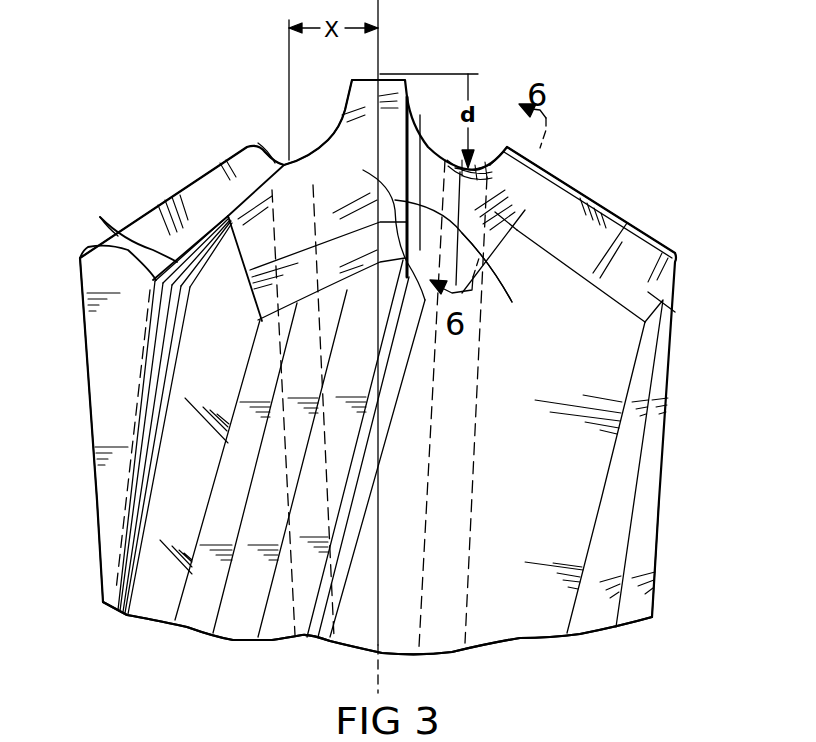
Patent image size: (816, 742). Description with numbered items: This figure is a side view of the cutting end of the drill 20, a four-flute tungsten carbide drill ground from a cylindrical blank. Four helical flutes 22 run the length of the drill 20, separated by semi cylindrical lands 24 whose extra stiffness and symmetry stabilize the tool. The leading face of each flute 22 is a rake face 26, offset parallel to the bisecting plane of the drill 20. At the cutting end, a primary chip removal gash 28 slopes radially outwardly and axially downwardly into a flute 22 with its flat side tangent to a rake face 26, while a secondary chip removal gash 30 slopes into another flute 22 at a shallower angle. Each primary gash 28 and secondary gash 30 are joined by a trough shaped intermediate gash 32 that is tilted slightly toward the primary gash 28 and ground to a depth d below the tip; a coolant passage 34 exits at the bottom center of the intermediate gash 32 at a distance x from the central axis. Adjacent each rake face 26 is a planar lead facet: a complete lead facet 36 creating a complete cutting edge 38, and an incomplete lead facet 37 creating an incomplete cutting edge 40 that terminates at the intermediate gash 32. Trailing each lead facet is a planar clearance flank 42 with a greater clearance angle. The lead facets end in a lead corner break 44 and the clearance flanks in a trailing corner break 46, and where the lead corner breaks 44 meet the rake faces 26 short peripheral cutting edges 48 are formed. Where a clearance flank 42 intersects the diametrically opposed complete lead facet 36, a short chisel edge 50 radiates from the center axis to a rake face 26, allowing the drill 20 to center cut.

The drill 20 is at (660, 92).
The flutes 22 is at (155, 604).
The land 24 is at (88, 375).
The rake face 26 is at (148, 212).
The primary chip removal gash 28 is at (560, 187).
The secondary chip removal gash 30 is at (115, 232).
The intermediate gash 32 is at (286, 168).
The coolant passage 34 is at (308, 172).
The complete lead facet 36 is at (392, 157).
The incomplete lead facet 37 is at (130, 207).
The complete cutting edge 38 is at (501, 278).
The incomplete cutting edge 40 is at (192, 173).
The clearance flank 42 is at (246, 268).
The lead corner break 44 is at (100, 217).
The trailing corner break 46 is at (257, 307).
The peripheral cutting edge 48 is at (108, 222).
The chisel edge 50 is at (353, 80).